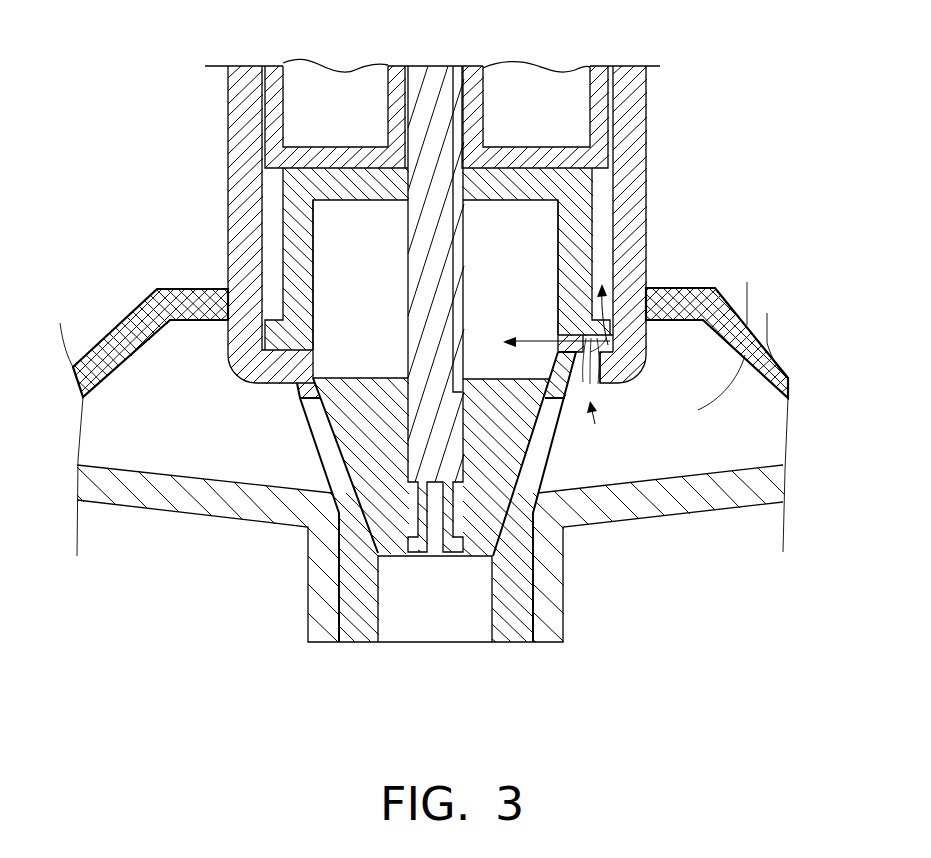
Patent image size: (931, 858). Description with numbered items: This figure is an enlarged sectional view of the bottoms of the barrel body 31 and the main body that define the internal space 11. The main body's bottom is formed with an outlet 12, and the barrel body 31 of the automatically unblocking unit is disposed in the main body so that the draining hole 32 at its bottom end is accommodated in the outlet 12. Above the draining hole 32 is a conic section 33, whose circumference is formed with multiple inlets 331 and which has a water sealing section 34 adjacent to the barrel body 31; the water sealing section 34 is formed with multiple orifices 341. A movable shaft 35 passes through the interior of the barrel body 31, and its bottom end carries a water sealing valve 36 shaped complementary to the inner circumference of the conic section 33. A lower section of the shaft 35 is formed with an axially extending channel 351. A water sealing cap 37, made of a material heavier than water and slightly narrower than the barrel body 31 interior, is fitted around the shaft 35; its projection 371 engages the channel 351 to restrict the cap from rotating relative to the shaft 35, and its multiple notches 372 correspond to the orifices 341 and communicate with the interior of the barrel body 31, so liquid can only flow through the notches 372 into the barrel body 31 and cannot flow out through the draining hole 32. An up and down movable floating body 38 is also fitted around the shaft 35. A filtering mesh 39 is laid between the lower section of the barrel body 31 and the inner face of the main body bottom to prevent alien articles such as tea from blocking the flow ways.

The internal space 11 is at (707, 193).
The outlet 12 is at (353, 603).
The barrel body 31 is at (250, 213).
The draining hole 32 is at (377, 588).
The conic section 33 is at (520, 500).
The inlets 331 is at (313, 403).
The water sealing section 34 is at (273, 367).
The orifices 341 is at (600, 384).
The movable shaft 35 is at (425, 287).
The channel 351 is at (466, 320).
The water sealing valve 36 is at (490, 512).
The water sealing cap 37 is at (572, 197).
The projection 371 is at (452, 183).
The notches 372 is at (612, 350).
The floating body 38 is at (600, 137).
The filtering mesh 39 is at (112, 333).